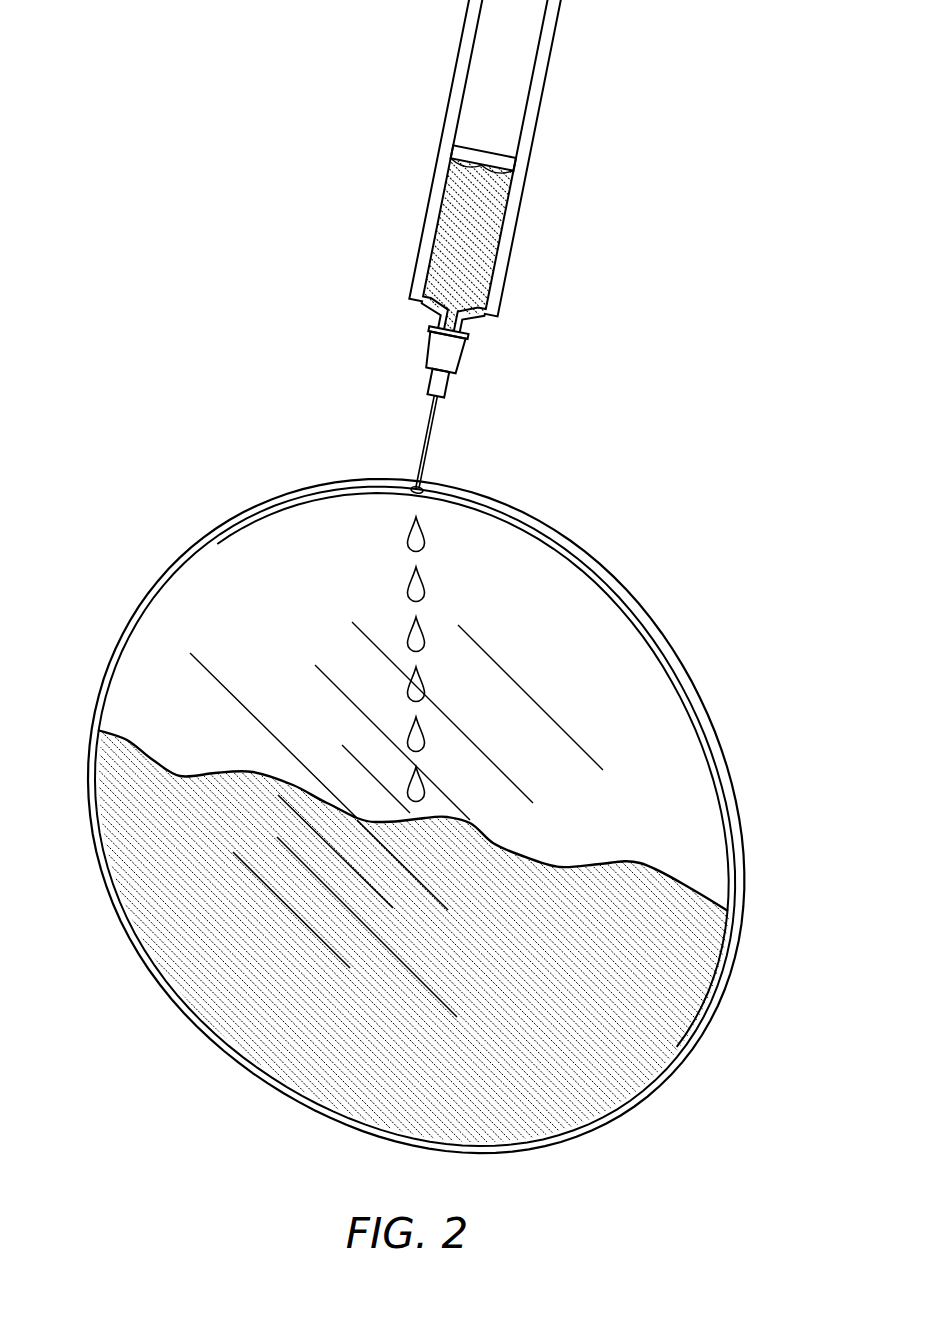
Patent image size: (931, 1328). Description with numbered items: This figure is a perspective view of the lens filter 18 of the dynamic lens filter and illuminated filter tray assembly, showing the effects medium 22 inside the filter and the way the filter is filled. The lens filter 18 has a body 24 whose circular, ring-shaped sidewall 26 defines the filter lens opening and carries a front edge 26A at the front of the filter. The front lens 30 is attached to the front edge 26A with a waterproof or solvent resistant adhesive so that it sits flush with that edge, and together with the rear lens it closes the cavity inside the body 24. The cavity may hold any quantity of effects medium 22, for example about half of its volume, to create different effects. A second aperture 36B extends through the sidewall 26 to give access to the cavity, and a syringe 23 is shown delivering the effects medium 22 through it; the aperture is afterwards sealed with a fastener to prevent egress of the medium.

The lens filter 18 is at (209, 489).
The effects medium 22 is at (423, 538).
The syringe 23 is at (512, 250).
The body 24 is at (208, 1042).
The sidewall 26 is at (571, 544).
The front edge 26A is at (212, 541).
The front lens 30 is at (650, 712).
The second aperture 36B is at (415, 486).